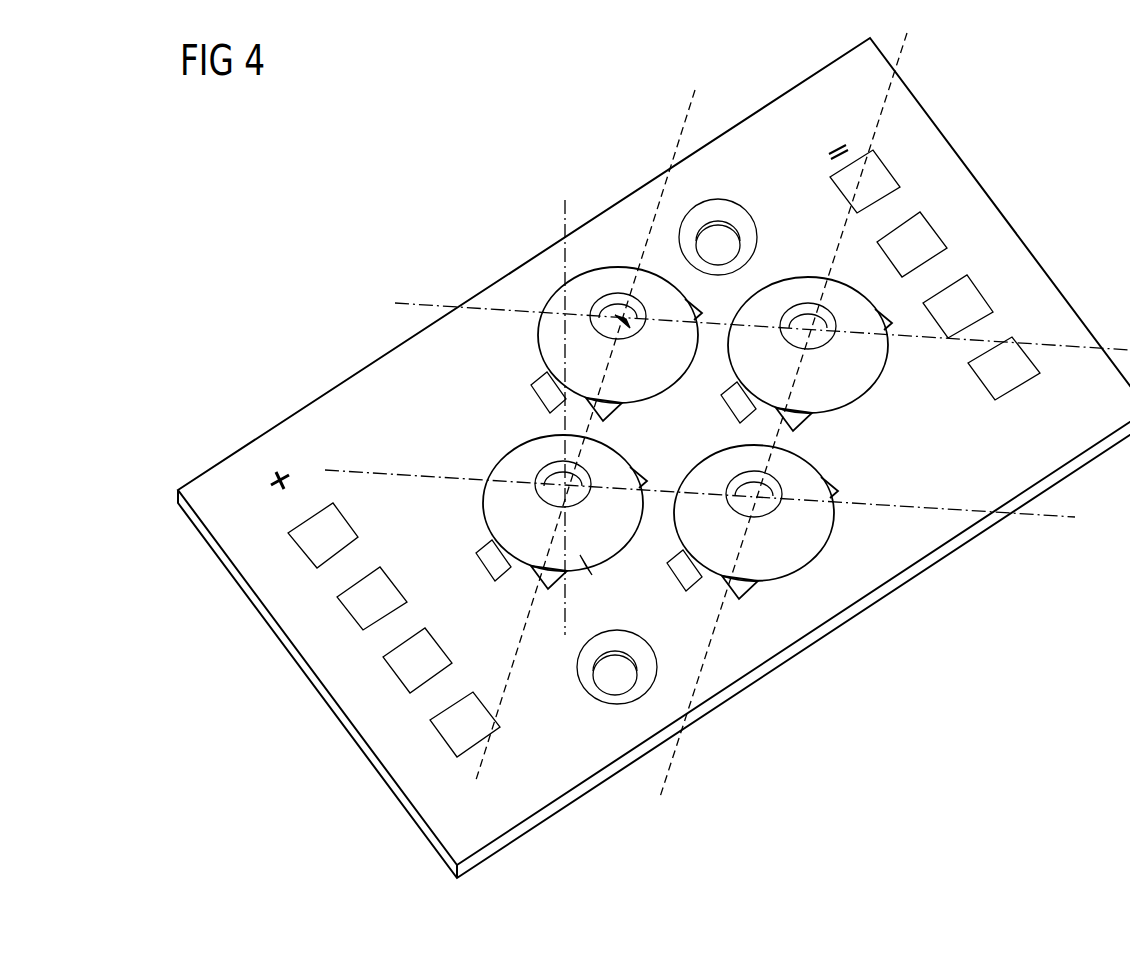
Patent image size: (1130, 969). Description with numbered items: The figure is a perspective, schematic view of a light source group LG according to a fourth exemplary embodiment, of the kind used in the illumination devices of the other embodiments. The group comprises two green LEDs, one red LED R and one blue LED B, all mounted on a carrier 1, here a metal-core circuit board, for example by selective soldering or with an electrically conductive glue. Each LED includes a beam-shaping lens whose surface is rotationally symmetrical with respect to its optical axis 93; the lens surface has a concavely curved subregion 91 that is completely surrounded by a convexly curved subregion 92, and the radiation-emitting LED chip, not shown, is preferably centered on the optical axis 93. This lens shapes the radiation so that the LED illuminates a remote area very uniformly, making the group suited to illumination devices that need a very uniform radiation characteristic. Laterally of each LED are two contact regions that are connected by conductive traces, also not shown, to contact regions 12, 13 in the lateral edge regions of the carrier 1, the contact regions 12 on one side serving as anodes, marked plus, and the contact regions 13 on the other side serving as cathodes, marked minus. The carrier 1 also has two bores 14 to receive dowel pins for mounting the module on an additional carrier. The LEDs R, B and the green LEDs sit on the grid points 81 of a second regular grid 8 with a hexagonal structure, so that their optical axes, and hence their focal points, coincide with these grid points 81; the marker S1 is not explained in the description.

The carrier 1 is at (985, 212).
The second regular grid 8 is at (683, 113).
The light source group LG is at (745, 118).
The optical axis 93 is at (560, 207).
The bores 14 is at (718, 240).
The contact regions 12 is at (312, 547).
The contact regions 13 is at (882, 170).
The grid points 81 is at (626, 342).
The concavely curved subregion 91 is at (578, 492).
The convexly curved subregion 92 is at (590, 574).
The first sensor position S1 is at (635, 330).
The blue LED B is at (872, 368).
The red LED R is at (505, 465).